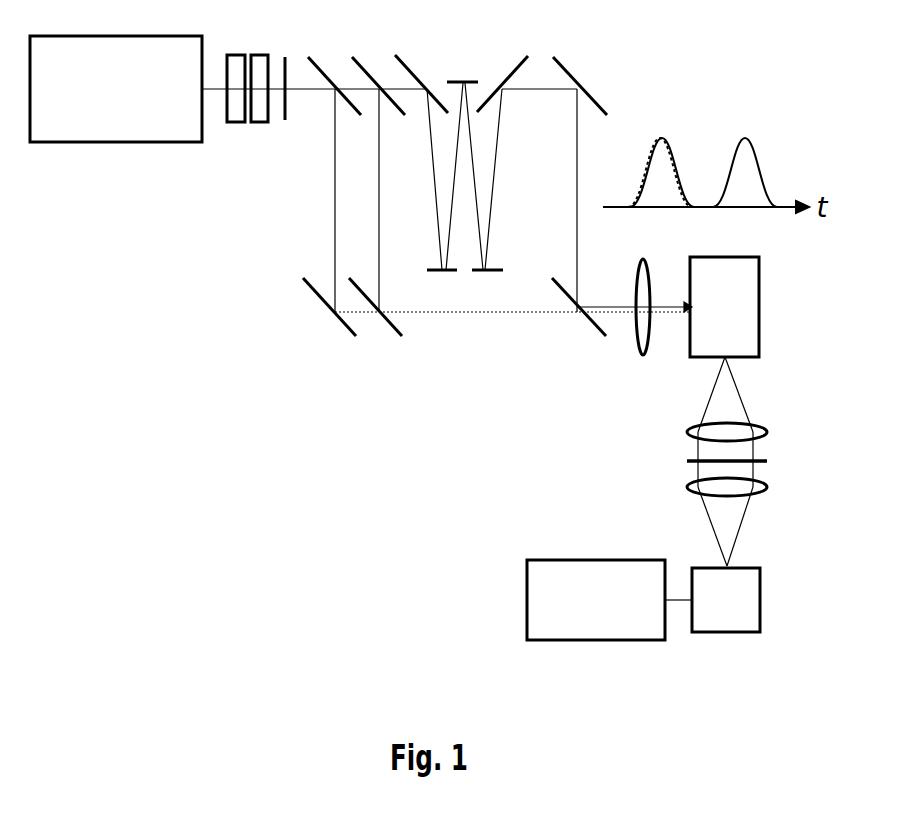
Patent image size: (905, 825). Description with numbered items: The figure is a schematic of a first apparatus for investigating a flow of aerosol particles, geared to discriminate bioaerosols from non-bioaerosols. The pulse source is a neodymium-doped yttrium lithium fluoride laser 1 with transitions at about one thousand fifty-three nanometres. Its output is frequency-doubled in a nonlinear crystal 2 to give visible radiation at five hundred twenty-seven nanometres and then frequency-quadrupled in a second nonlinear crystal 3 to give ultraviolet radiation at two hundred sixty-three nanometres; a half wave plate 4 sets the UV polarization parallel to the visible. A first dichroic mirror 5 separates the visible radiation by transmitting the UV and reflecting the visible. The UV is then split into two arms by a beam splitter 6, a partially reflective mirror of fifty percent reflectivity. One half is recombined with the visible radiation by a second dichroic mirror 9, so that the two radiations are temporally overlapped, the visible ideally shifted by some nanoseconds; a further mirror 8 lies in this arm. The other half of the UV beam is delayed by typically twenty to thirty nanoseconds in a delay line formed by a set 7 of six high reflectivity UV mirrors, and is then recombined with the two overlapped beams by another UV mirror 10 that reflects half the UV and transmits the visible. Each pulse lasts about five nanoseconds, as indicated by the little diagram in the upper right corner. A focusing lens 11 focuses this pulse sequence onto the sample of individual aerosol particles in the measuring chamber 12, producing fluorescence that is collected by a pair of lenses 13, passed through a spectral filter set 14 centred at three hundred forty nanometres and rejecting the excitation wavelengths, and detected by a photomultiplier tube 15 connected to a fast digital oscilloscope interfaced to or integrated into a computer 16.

The laser 1 is at (116, 89).
The nonlinear crystal 2 is at (236, 67).
The second nonlinear crystal 3 is at (259, 67).
The half wave plate 4 is at (283, 66).
The first dichroic mirror 5 is at (334, 64).
The beam splitter 6 is at (378, 64).
The set of high reflectivity UV mirrors 7 is at (501, 150).
The mirror 8 is at (329, 328).
The second dichroic mirror 9 is at (375, 328).
The UV mirror 10 is at (579, 328).
The focusing lens 11 is at (641, 328).
The measuring chamber 12 is at (724, 307).
The pair of lenses 13 is at (751, 460).
The spectral filter set 14 is at (703, 462).
The photomultiplier tube 15 is at (726, 600).
The computer 16 is at (596, 600).